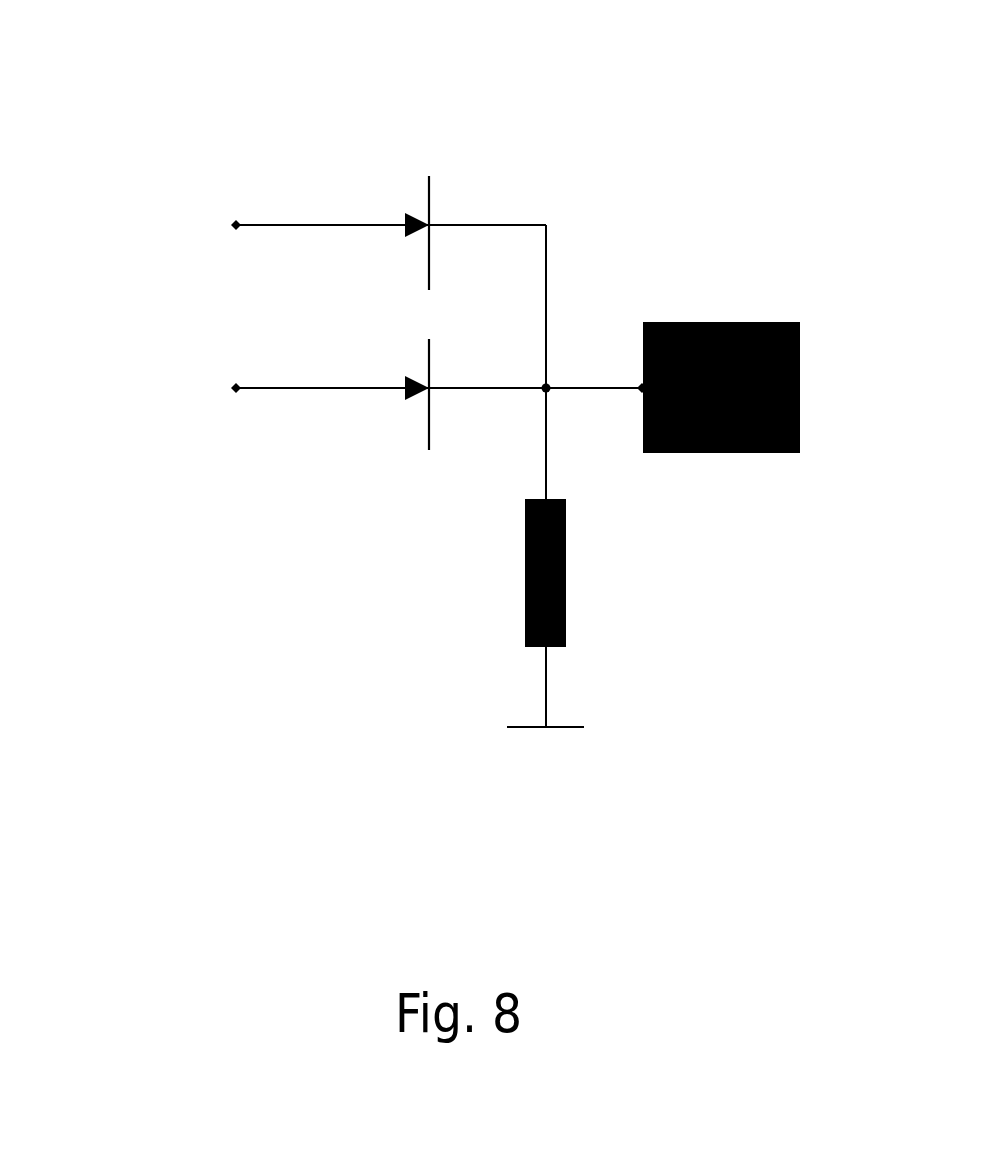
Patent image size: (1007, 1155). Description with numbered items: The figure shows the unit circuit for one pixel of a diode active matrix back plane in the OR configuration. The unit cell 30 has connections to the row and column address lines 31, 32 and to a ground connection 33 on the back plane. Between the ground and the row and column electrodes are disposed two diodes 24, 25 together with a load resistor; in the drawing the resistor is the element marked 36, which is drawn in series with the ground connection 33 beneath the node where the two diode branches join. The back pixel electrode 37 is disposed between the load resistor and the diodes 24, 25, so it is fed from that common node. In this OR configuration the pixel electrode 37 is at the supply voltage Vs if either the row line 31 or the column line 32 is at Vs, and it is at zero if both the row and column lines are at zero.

The diode 24 is at (421, 195).
The diode 25 is at (426, 453).
The unit cell 30 is at (347, 256).
The row address line 31 is at (183, 227).
The column address line 32 is at (205, 397).
The ground connection 33 is at (608, 829).
The resistor 36 is at (524, 686).
The back pixel electrode 37 is at (827, 529).